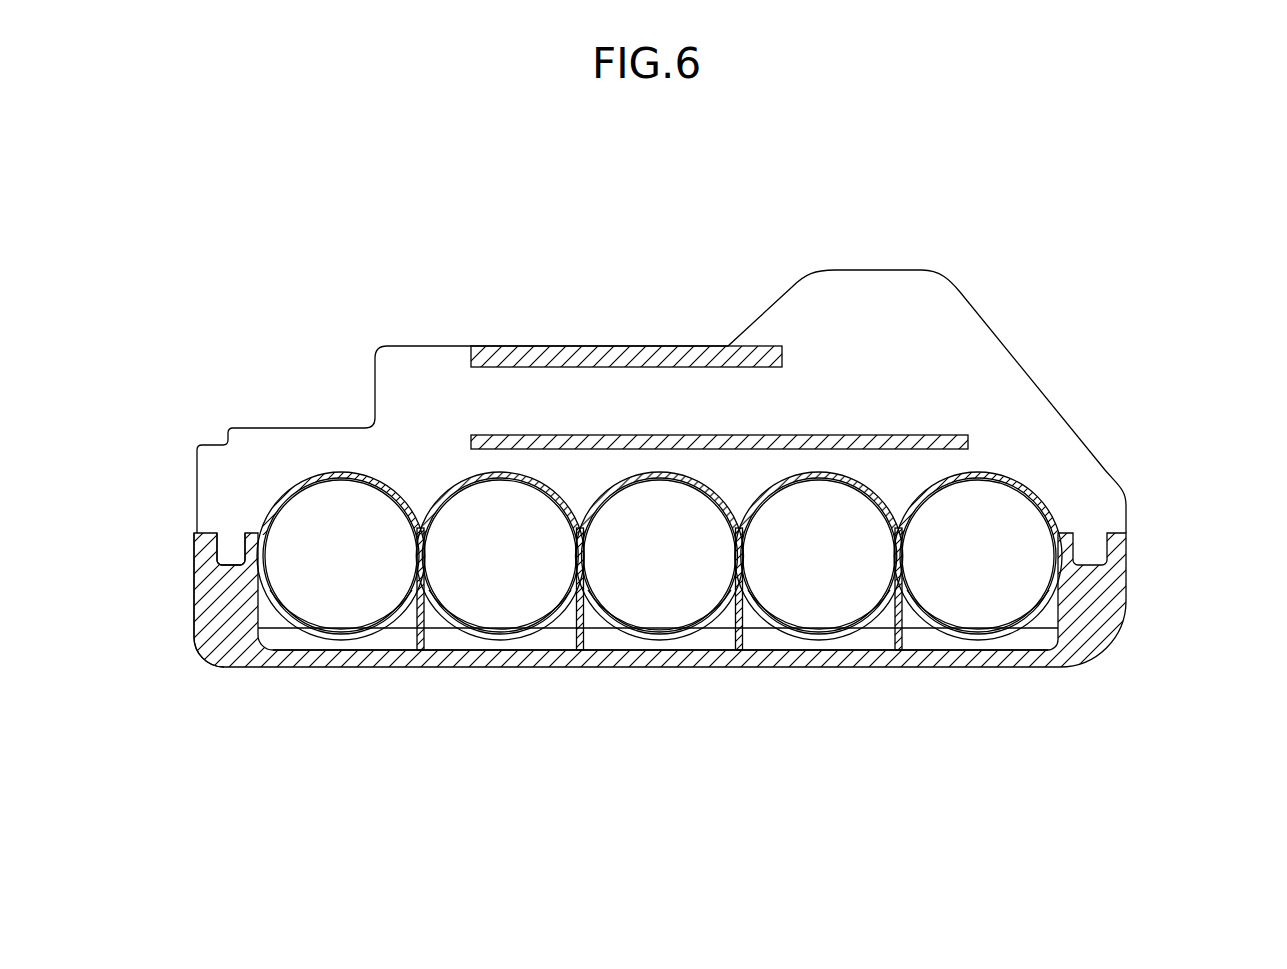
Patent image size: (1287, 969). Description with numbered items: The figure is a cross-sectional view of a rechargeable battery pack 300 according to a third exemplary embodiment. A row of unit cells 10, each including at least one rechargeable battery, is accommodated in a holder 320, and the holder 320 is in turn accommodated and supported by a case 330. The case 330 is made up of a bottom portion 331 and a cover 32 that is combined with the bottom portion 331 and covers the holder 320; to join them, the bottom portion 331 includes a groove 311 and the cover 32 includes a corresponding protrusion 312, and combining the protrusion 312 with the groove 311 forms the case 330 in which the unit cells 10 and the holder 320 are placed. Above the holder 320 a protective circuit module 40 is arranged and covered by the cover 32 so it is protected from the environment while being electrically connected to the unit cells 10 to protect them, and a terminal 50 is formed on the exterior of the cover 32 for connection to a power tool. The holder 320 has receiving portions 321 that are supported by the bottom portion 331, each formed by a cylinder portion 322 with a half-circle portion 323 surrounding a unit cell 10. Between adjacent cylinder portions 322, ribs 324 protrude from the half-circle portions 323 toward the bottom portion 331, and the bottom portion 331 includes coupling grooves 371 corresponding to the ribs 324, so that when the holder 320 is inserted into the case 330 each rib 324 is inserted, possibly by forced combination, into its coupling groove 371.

The rechargeable battery pack 300 is at (504, 243).
The unit cell 10 is at (997, 527).
The protective circuit module 40 is at (674, 440).
The terminal 50 is at (580, 355).
The cover 32 is at (1103, 500).
The case 330 is at (1213, 490).
The bottom portion 331 is at (1122, 552).
The groove 311 is at (227, 543).
The protrusion 312 is at (233, 550).
The holder 320 is at (870, 476).
The receiving portion 321 is at (878, 737).
The cylinder portion 322 is at (795, 630).
The half-circle portion 323 is at (817, 477).
The rib 324 is at (733, 618).
The coupling groove 371 is at (582, 645).